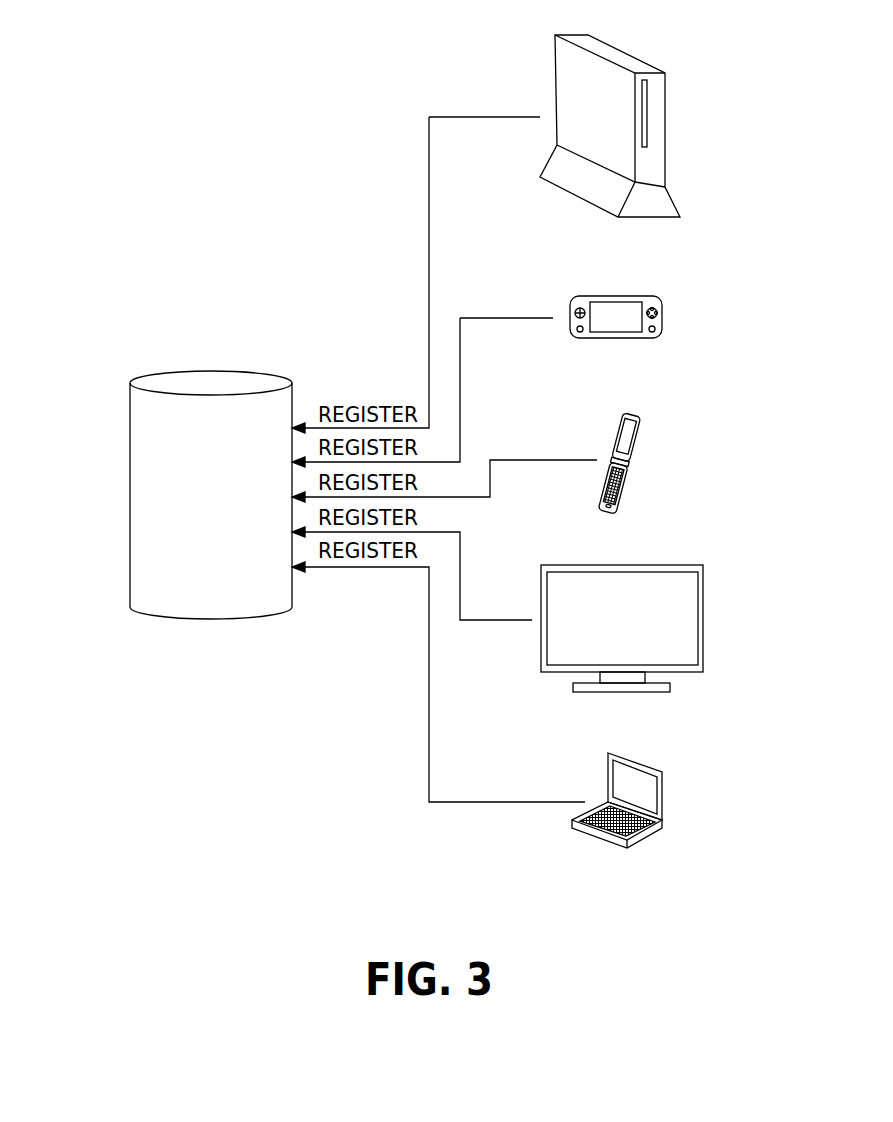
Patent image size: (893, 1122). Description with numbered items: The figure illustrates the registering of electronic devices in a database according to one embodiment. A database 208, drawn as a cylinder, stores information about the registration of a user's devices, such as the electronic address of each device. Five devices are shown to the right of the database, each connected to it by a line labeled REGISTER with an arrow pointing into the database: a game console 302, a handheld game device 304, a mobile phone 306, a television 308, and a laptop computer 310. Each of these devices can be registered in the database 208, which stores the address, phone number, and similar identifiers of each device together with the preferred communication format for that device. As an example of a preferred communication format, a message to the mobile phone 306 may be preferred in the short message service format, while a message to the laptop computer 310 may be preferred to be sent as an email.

The database 208 is at (127, 421).
The game console 302 is at (665, 127).
The handheld game device 304 is at (662, 310).
The mobile phone 306 is at (642, 443).
The television 308 is at (703, 608).
The laptop computer 310 is at (663, 795).